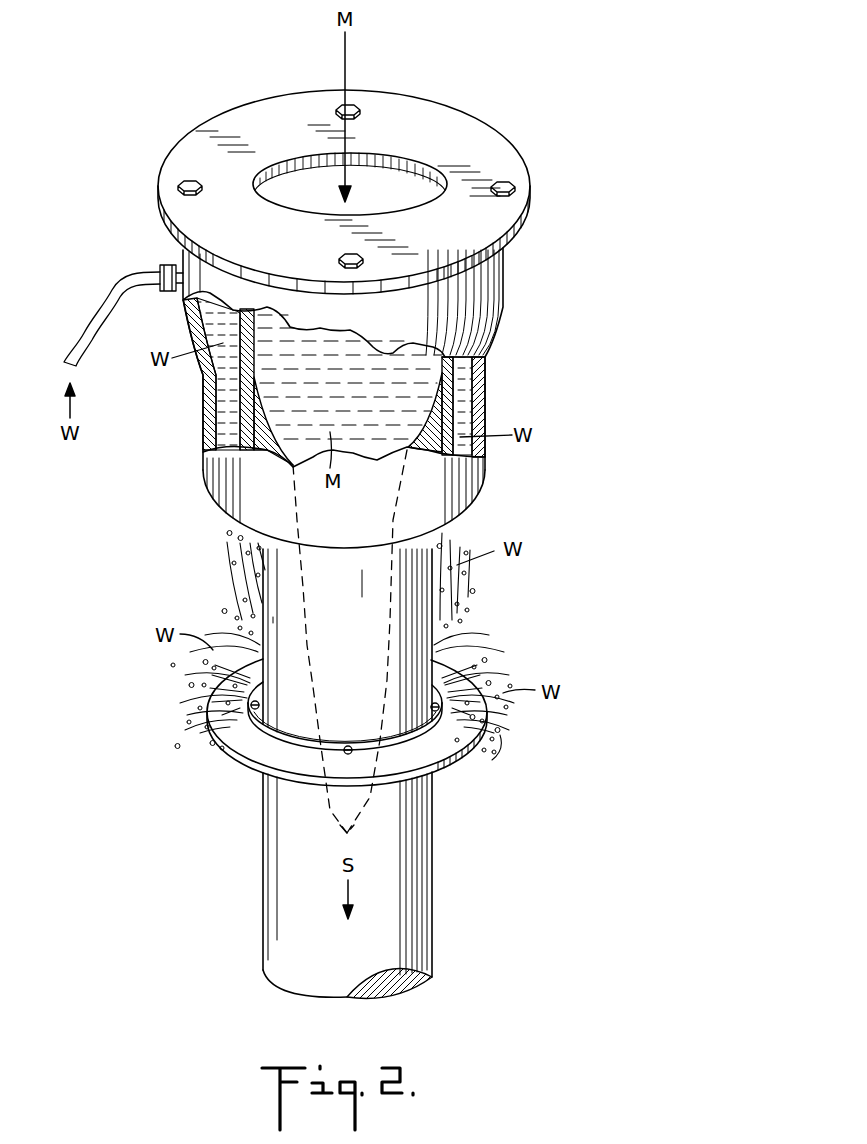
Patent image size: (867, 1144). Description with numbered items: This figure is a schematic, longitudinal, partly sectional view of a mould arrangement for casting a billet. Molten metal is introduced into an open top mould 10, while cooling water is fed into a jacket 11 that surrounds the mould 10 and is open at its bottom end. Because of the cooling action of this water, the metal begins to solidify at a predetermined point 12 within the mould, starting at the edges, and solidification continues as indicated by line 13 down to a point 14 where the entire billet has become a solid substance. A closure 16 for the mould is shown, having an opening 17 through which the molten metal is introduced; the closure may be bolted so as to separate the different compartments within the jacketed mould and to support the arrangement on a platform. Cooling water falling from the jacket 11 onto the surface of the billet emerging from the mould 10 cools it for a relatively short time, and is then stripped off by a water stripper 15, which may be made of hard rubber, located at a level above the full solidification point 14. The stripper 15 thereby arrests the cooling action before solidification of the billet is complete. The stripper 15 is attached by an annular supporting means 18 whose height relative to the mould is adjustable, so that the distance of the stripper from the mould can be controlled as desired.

The open top mould 10 is at (445, 356).
The jacket 11 is at (203, 410).
The predetermined point 12 is at (483, 366).
The line 13 is at (310, 647).
The point 14 is at (341, 840).
The water stripper 15 is at (440, 750).
The closure 16 is at (490, 138).
The opening 17 is at (407, 163).
The annular supporting means 18 is at (287, 737).